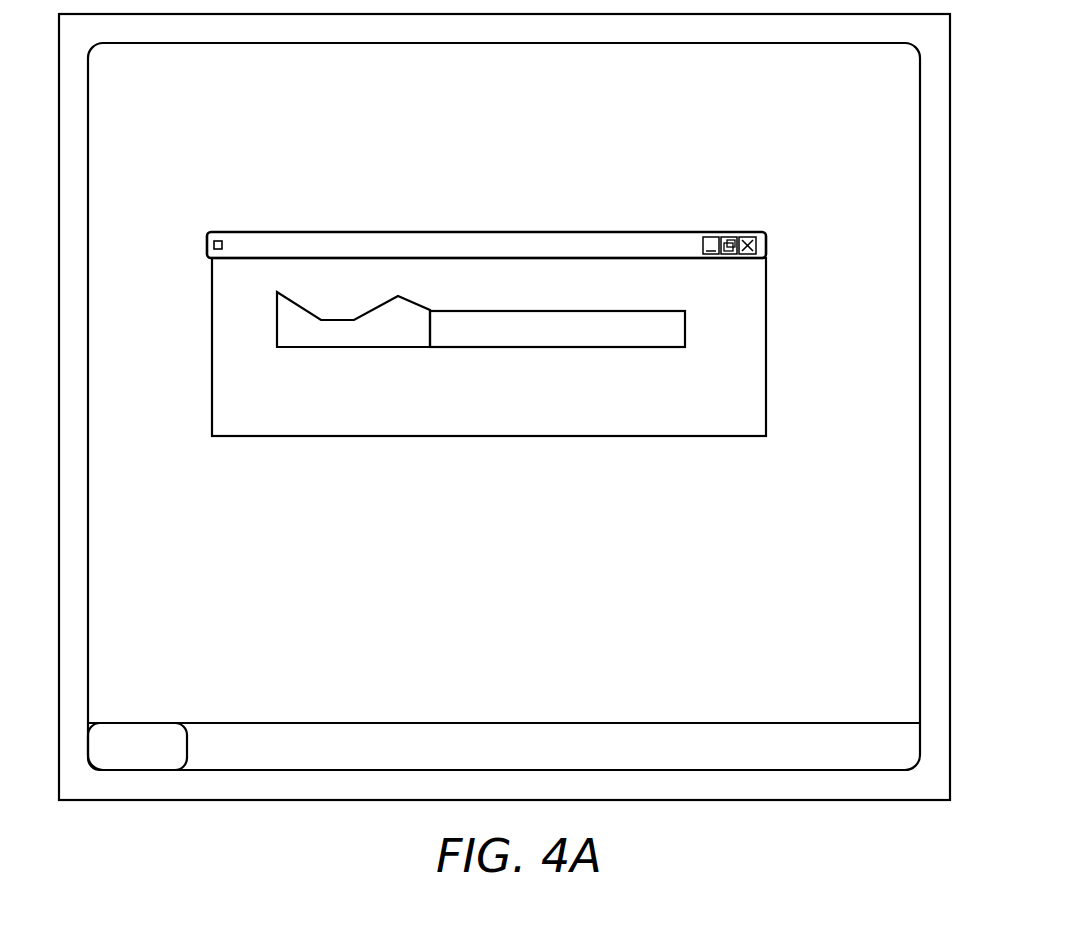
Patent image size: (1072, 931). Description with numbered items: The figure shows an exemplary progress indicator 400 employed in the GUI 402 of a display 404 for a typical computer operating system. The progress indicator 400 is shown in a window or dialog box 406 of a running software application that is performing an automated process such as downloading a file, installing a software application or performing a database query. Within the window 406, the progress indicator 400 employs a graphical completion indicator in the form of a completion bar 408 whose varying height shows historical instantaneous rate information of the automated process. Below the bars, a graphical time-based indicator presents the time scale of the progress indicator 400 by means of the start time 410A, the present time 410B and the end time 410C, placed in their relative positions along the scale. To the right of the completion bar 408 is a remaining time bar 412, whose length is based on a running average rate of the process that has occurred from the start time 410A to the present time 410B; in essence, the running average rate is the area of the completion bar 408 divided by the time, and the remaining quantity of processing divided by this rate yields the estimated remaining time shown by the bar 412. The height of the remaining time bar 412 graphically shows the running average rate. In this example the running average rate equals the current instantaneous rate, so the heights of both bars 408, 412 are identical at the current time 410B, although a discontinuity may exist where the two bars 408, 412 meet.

The progress indicator 400 is at (272, 198).
The GUI 402 is at (920, 218).
The display 404 is at (950, 50).
The window or dialog box 406 is at (250, 232).
The completion bar 408 is at (336, 320).
The start time 410A is at (272, 396).
The present time 410B is at (430, 396).
The end time 410C is at (687, 396).
The remaining time bar 412 is at (547, 311).